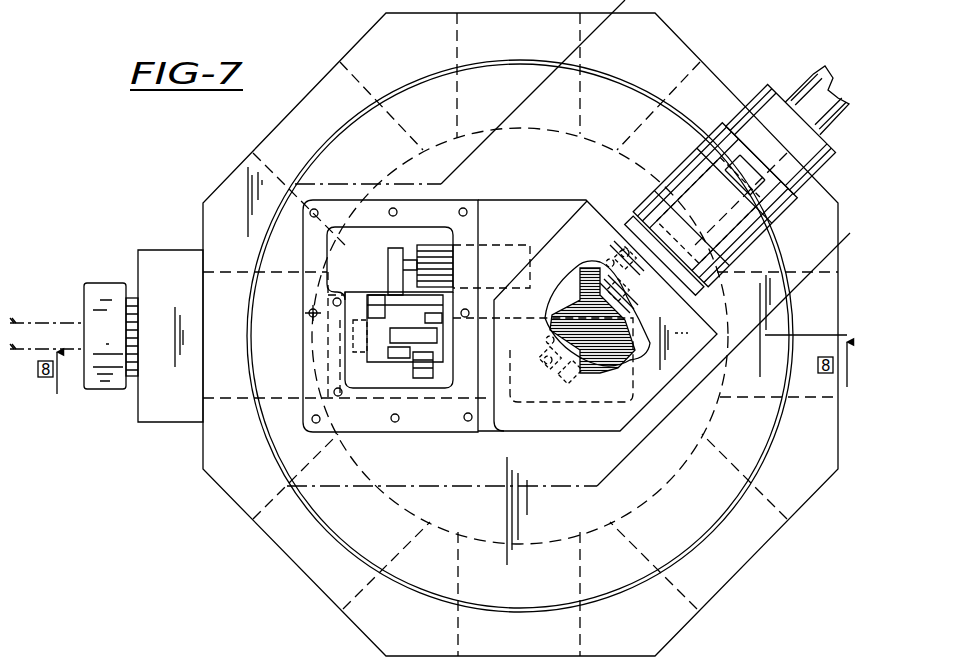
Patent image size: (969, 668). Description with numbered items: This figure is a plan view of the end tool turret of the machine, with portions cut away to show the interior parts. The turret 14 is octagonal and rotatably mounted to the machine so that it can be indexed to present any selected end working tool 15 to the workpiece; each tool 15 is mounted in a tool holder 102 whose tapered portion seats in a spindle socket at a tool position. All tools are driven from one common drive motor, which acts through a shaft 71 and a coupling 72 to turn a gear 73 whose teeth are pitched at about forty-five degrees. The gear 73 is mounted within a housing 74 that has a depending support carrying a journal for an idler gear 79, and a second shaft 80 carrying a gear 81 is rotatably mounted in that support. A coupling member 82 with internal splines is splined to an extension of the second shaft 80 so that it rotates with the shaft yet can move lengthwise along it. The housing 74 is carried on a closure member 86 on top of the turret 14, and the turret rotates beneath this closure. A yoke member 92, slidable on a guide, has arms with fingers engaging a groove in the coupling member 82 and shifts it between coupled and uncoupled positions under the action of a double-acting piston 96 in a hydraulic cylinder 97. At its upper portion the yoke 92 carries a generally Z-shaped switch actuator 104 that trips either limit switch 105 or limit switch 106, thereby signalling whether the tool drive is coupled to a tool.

The turret 14 is at (682, 57).
The end working tool 15 is at (32, 323).
The shaft 71 is at (807, 97).
The coupling 72 is at (705, 157).
The gear 73 is at (572, 312).
The housing 74 is at (563, 412).
The idler gear 79 is at (596, 265).
The second shaft 80 is at (513, 352).
The gear 81 is at (647, 342).
The coupling member 82 is at (362, 372).
The closure member 86 is at (348, 203).
The yoke member 92 is at (372, 335).
The double-acting piston 96 is at (410, 262).
The hydraulic cylinder 97 is at (433, 264).
The tool holder 102 is at (110, 381).
The switch actuator 104 is at (413, 337).
The limit switch 105 is at (380, 295).
The limit switch 106 is at (425, 370).